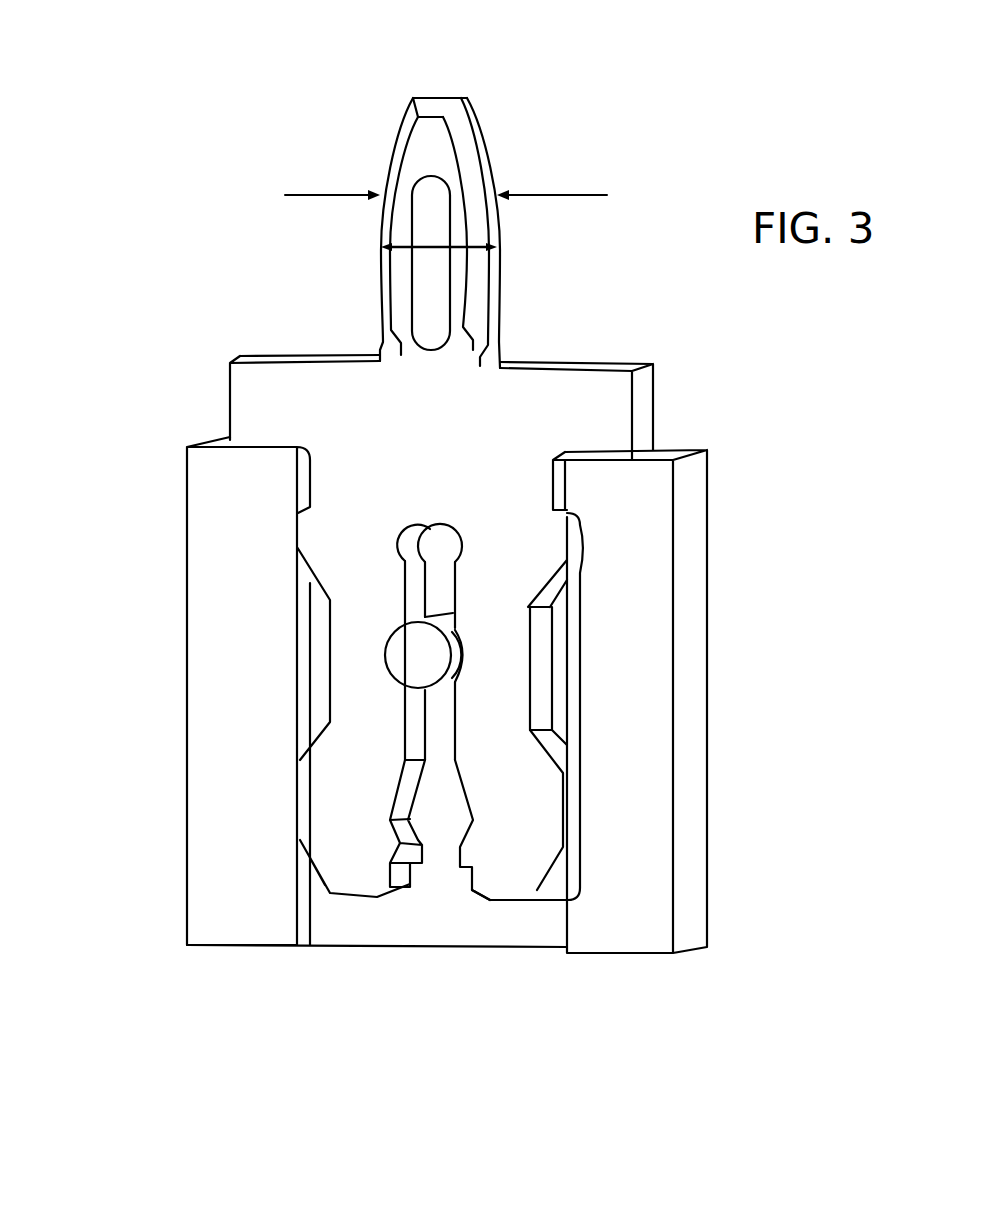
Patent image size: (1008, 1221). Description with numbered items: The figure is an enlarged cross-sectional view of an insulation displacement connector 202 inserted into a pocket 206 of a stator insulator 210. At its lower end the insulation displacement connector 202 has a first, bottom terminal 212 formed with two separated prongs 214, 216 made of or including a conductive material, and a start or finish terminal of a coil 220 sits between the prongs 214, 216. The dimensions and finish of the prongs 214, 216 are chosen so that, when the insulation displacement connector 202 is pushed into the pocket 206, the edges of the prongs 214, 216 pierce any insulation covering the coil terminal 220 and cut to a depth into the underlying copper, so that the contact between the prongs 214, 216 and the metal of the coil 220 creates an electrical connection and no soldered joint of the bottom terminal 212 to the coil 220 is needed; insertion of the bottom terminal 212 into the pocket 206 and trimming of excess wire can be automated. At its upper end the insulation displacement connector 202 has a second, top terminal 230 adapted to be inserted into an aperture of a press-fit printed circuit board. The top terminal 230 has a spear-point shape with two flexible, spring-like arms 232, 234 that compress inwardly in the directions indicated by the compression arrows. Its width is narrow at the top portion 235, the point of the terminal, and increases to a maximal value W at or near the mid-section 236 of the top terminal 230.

The insulation displacement connector 202 is at (284, 361).
The pocket 206 is at (435, 830).
The stator insulator 210 is at (230, 718).
The bottom terminal 212 is at (590, 567).
The prong 214 is at (355, 840).
The prong 216 is at (515, 805).
The coil terminal 220 is at (386, 643).
The top terminal 230 is at (380, 74).
The spring-like arm 232 is at (380, 283).
The spring-like arm 234 is at (480, 302).
The top portion 235 is at (438, 97).
The mid-section 236 is at (505, 247).